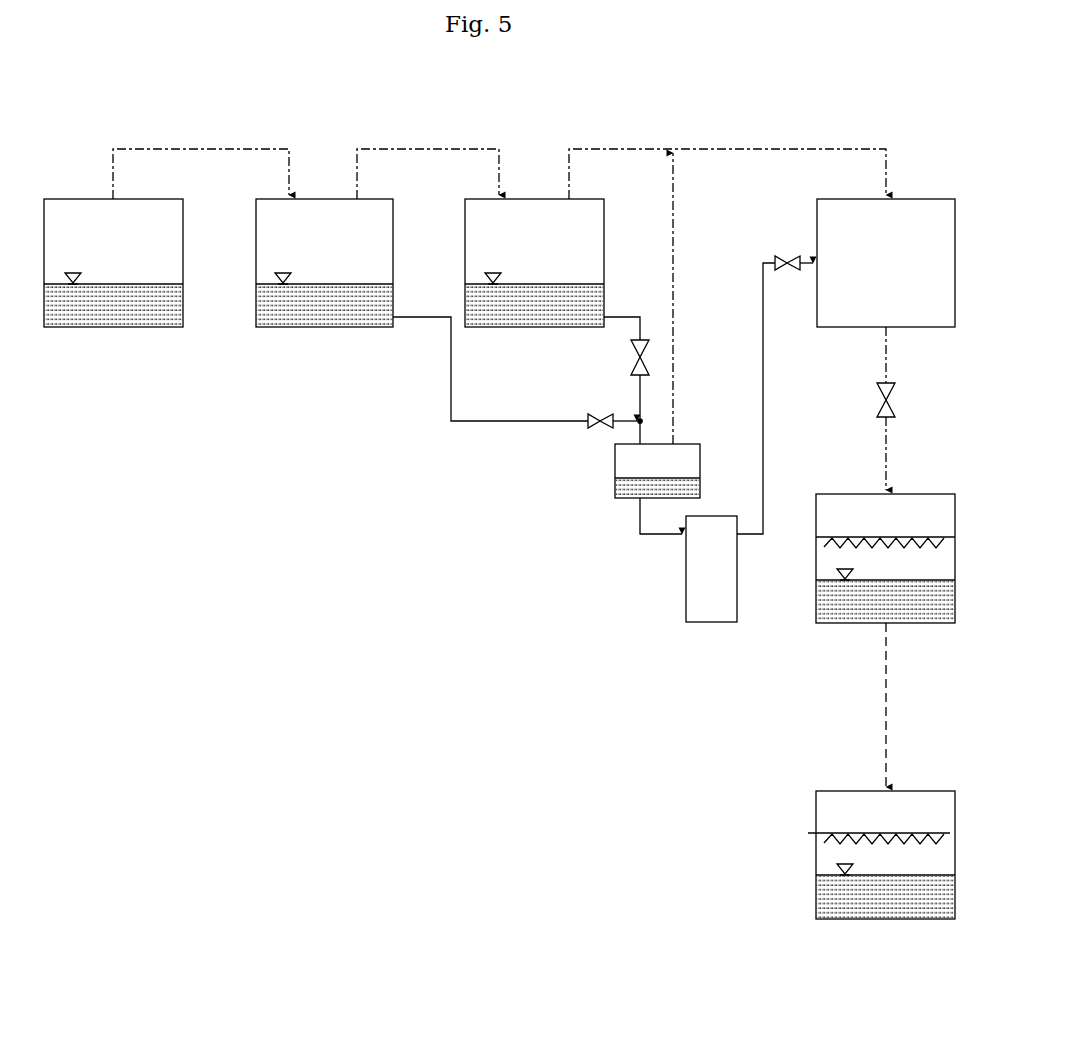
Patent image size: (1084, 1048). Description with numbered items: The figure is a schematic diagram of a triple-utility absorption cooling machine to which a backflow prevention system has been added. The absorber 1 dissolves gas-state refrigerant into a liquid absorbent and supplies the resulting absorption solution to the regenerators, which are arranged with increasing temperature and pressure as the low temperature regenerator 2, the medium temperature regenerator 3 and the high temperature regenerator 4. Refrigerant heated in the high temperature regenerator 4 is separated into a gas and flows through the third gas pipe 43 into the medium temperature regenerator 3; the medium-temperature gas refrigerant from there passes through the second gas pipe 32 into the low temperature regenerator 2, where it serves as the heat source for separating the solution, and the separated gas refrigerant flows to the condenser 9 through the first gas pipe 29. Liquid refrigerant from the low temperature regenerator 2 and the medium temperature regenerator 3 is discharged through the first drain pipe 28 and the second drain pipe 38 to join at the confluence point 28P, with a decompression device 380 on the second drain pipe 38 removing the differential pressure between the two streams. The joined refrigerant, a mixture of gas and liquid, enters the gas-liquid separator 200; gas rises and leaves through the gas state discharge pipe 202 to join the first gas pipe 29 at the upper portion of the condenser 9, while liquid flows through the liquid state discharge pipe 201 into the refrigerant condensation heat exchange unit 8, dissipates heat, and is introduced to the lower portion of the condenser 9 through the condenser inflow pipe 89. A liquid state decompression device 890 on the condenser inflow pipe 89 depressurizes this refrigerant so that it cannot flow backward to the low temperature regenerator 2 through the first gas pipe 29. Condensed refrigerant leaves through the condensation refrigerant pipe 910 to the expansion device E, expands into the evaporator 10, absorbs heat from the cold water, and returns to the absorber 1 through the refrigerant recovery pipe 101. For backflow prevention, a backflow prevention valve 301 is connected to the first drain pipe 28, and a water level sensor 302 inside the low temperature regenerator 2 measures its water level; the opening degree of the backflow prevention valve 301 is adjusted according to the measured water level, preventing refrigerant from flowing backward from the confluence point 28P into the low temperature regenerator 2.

The absorber 1 is at (903, 919).
The low temperature regenerator 2 is at (535, 327).
The medium temperature regenerator 3 is at (325, 327).
The high temperature regenerator 4 is at (117, 327).
The refrigerant condensation heat exchange unit 8 is at (727, 516).
The condenser 9 is at (840, 327).
The evaporator 10 is at (922, 623).
The first drain pipe 28 is at (622, 317).
The confluence point 28P is at (642, 421).
The first gas pipe 29 is at (653, 149).
The second gas pipe 32 is at (441, 149).
The second drain pipe 38 is at (480, 421).
The third gas pipe 43 is at (180, 149).
The condenser inflow pipe 89 is at (764, 440).
The refrigerant recovery pipe 101 is at (887, 722).
The gas-liquid separator 200 is at (614, 466).
The liquid state discharge pipe 201 is at (656, 536).
The gas state discharge pipe 202 is at (674, 240).
The backflow prevention valve 301 is at (638, 357).
The water level sensor 302 is at (494, 272).
The decompression device 380 is at (600, 414).
The liquid state decompression device 890 is at (787, 255).
The condensation refrigerant pipe 910 is at (887, 446).
The expansion device E is at (895, 397).